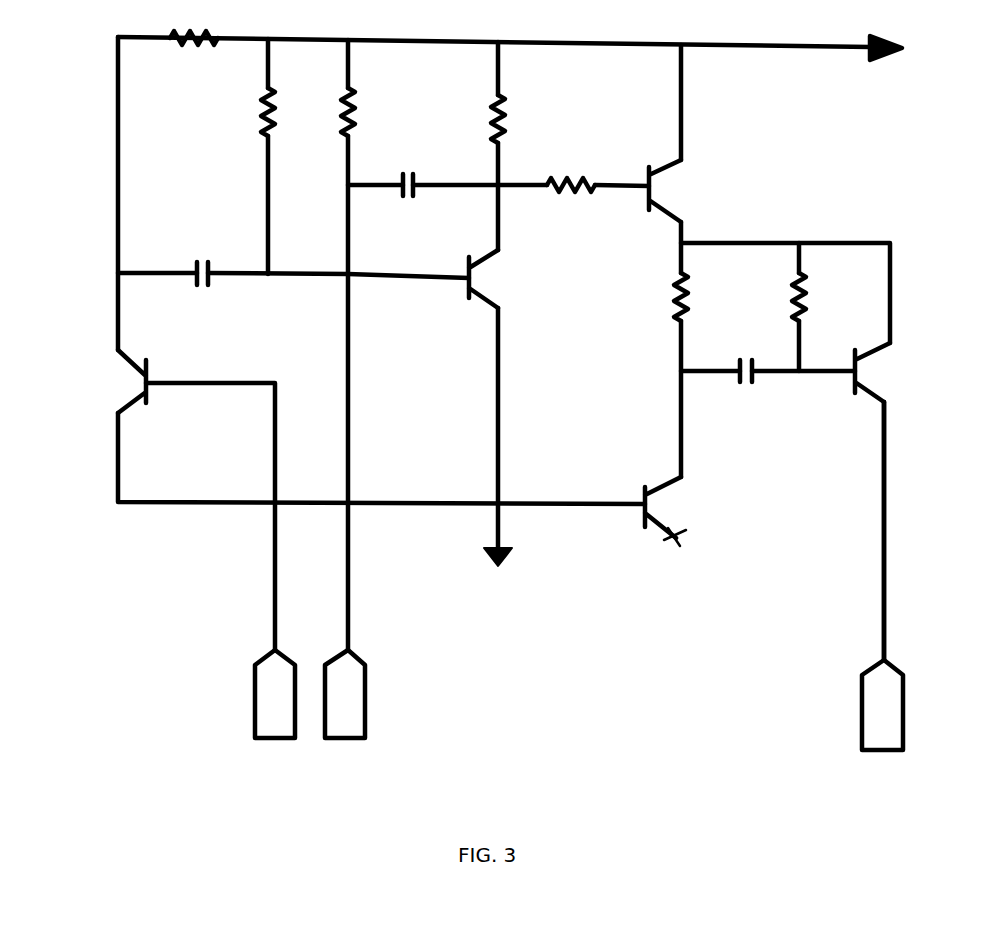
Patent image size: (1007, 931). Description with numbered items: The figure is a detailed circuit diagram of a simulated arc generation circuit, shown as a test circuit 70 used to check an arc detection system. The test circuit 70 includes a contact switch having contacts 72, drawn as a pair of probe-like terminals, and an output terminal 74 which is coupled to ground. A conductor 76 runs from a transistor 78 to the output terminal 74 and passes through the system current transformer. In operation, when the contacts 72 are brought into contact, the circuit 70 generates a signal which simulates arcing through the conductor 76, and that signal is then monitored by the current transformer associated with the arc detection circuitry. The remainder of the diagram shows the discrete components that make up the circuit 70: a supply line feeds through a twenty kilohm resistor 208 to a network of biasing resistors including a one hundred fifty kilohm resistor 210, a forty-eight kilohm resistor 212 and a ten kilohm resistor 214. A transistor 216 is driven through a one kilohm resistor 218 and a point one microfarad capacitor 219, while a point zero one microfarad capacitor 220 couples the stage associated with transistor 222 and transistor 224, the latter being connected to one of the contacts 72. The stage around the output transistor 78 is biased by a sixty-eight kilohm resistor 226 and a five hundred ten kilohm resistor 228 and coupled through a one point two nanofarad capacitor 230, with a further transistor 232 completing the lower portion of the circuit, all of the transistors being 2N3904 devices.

The test circuit 70 is at (117, 746).
The contacts 72 is at (338, 752).
The output terminal 74 is at (880, 757).
The conductor 76 is at (888, 600).
The transistor 78 is at (877, 372).
The resistor 208 is at (188, 54).
The resistor 210 is at (283, 112).
The resistor 212 is at (362, 113).
The resistor 214 is at (512, 121).
The transistor 216 is at (678, 186).
The resistor 218 is at (572, 200).
The capacitor 219 is at (408, 198).
The capacitor 220 is at (200, 288).
The transistor 222 is at (498, 280).
The transistor 224 is at (152, 393).
The resistor 226 is at (697, 300).
The resistor 228 is at (812, 300).
The capacitor 230 is at (745, 388).
The transistor 232 is at (651, 530).